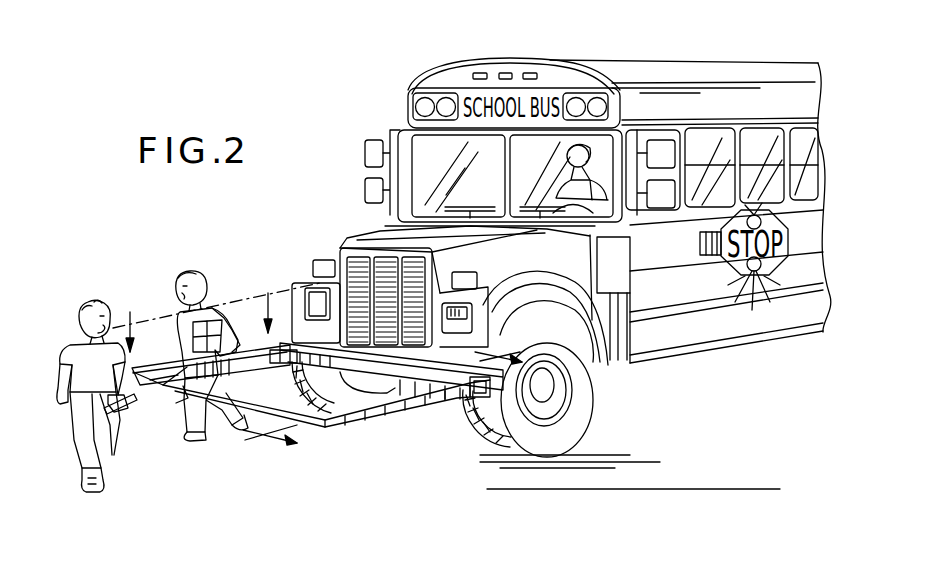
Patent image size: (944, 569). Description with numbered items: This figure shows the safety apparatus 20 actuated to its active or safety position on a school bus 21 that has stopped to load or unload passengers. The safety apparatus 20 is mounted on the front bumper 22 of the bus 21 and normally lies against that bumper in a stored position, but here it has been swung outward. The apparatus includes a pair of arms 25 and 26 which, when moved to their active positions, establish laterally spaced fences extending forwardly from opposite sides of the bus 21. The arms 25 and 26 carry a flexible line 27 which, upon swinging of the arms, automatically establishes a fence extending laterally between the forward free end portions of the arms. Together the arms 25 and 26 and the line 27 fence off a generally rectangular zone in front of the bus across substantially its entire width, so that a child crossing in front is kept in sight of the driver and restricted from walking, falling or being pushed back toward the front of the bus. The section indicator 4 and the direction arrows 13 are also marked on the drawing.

The section line 4- 4 is at (216, 310).
The direction of pedestrian crossing arrows 13 is at (478, 352).
The safety apparatus 20 is at (317, 410).
The school bus 21 is at (362, 238).
The front bumper 22 is at (325, 325).
The arm 25 is at (184, 380).
The arm 26 is at (398, 410).
The flexible line 27 is at (240, 383).